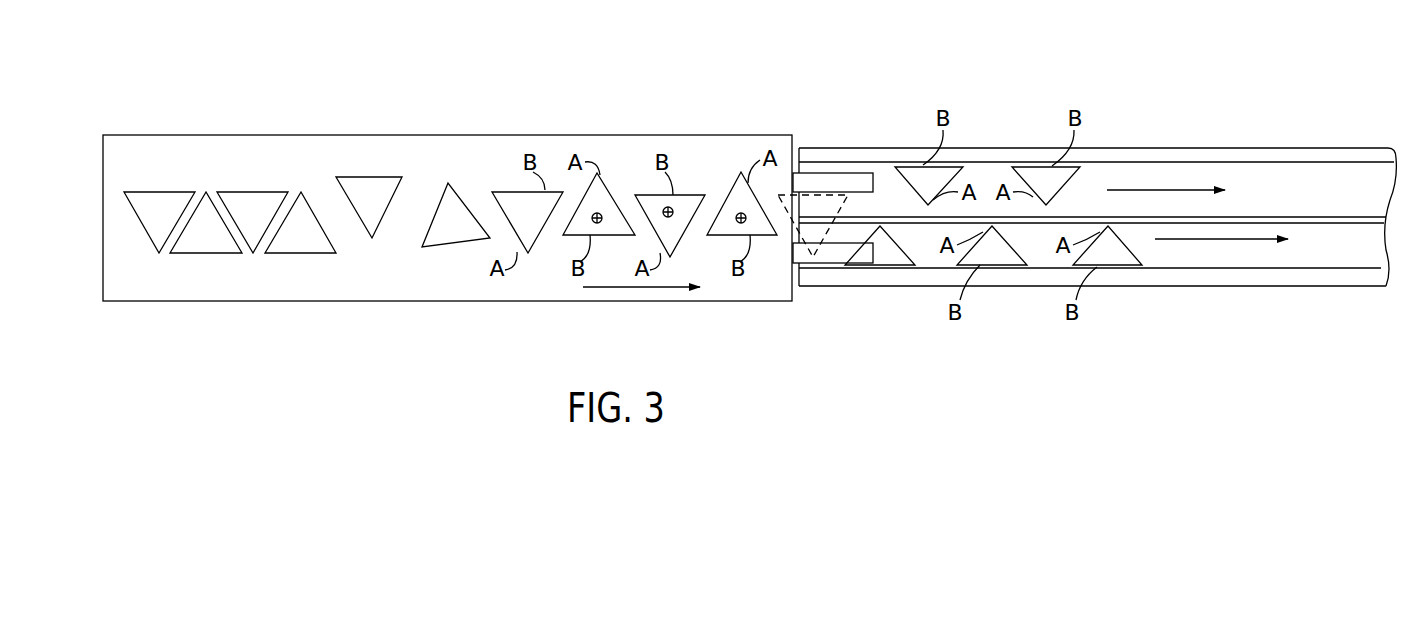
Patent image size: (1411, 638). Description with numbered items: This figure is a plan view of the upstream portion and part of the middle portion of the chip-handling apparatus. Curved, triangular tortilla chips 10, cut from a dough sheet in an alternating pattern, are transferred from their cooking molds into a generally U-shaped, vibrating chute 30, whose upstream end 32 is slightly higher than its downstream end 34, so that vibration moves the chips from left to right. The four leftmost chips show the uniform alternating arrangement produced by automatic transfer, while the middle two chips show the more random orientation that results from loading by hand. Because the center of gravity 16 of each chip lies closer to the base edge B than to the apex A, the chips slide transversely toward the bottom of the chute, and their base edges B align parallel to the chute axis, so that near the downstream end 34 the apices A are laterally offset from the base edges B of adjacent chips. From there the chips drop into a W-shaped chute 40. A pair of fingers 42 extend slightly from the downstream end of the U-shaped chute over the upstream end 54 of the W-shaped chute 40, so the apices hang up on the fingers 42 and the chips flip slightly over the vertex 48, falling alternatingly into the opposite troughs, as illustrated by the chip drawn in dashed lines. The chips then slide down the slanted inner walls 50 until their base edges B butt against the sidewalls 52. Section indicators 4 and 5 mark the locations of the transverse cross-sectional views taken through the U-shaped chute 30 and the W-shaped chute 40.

The tortilla chips 10 is at (158, 203).
The center of gravity 16 is at (598, 217).
The U-shaped vibrating chute 30 is at (448, 287).
The upstream end 32 is at (85, 172).
The downstream end 34 is at (742, 312).
The W-shaped chute 40 is at (1094, 185).
The fingers 42 is at (858, 173).
The vertex 48 is at (1362, 220).
The slanted inner walls 50 is at (1291, 202).
The sidewalls 52 is at (1232, 157).
The upstream end of the W-shaped chute 54 is at (800, 302).
The section line 4- 4 is at (783, 122).
The section line 5- 5 is at (1007, 118).